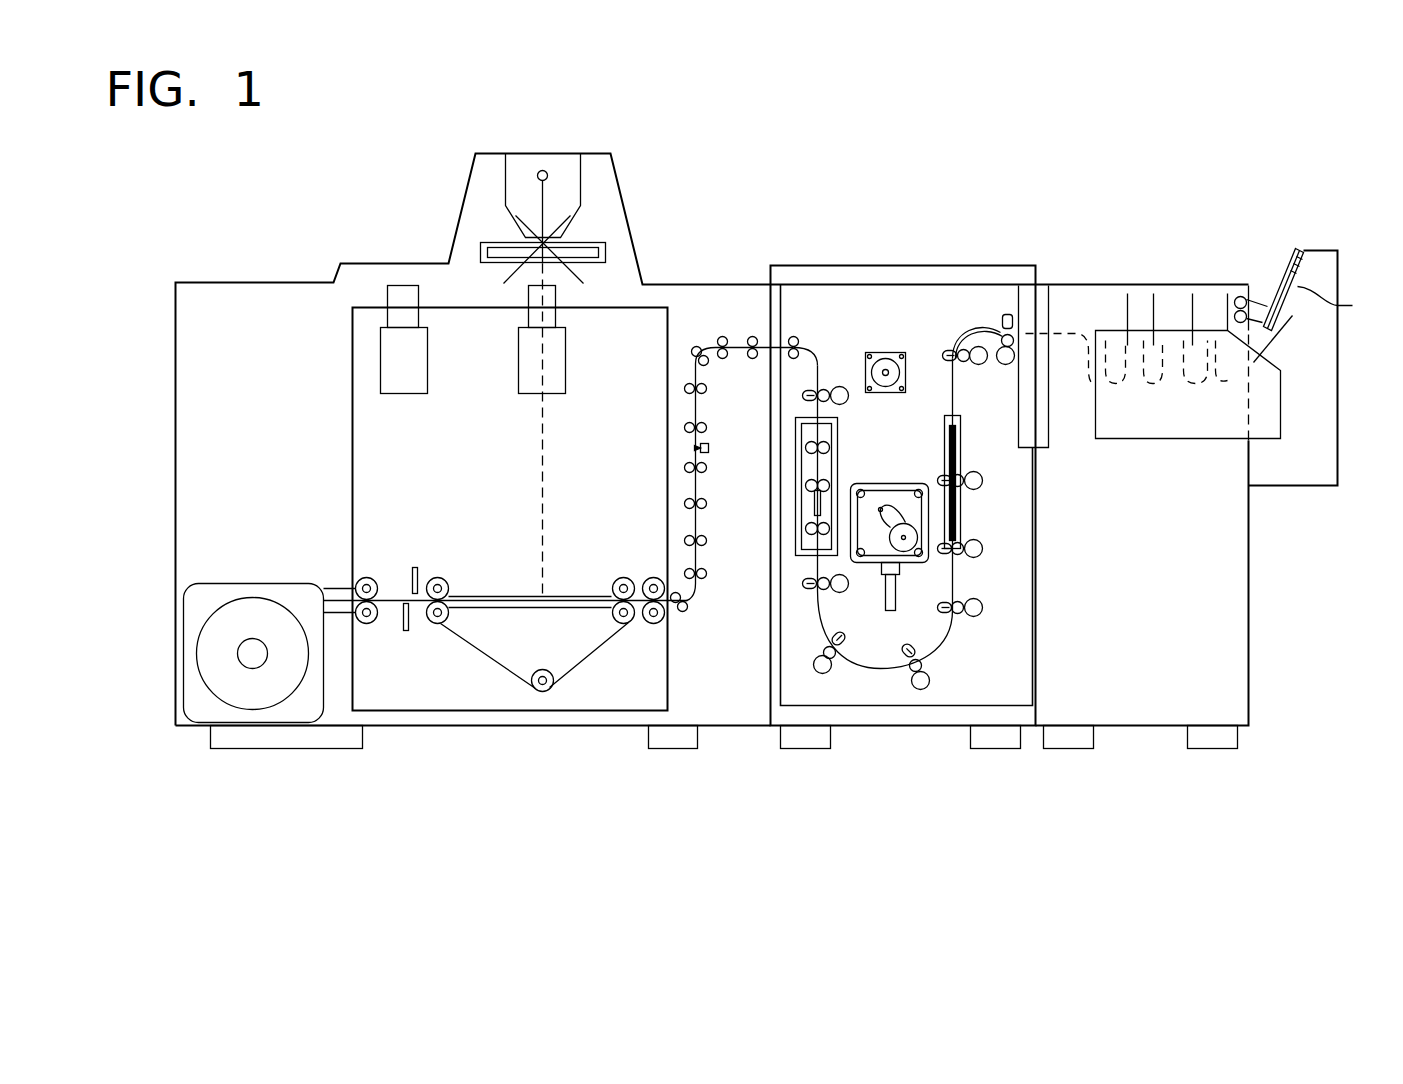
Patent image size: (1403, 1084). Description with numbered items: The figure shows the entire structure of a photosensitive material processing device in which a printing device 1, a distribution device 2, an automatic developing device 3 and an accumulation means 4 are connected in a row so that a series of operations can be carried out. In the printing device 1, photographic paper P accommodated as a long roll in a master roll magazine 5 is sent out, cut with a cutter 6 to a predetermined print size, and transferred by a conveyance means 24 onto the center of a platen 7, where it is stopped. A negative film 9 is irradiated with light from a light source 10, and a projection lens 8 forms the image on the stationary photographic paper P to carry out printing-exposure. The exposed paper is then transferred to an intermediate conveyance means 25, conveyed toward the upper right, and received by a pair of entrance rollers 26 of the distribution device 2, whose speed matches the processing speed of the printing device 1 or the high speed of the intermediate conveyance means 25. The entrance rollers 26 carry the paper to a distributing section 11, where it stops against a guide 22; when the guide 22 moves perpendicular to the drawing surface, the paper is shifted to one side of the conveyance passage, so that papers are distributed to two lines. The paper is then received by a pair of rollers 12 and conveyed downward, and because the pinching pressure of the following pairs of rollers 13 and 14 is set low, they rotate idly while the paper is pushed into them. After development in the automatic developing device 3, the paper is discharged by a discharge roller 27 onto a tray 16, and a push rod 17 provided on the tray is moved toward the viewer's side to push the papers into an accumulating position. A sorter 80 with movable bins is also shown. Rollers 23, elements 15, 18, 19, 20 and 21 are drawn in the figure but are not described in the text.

The printing device 1 is at (636, 222).
The distribution device 2 is at (920, 267).
The automatic developing device 3 is at (1079, 285).
The accumulation means 4 is at (1305, 250).
The master roll magazine 5 is at (220, 683).
The cutter 6 is at (405, 632).
The platen 7 is at (498, 608).
The projection lens 8 is at (553, 388).
The negative film 9 is at (540, 240).
The light source 10 is at (545, 170).
The distributing section 11 is at (840, 448).
The pair of rollers 12 is at (808, 590).
The pair of rollers 13 is at (835, 633).
The pair of rollers 14 is at (905, 648).
The valve 15 is at (940, 607).
The tray 16 is at (1342, 302).
The push rod 17 is at (1258, 297).
The guide plate 18 is at (1263, 347).
The processing roller pair 19 is at (809, 446).
The processing roller pair 20 is at (809, 484).
The processing roller pair 21 is at (809, 527).
The guide 22 is at (830, 497).
The feed rollers 23 is at (366, 625).
The conveyance means 24 is at (465, 642).
The intermediate conveyance means 25 is at (663, 614).
The entrance rollers 26 is at (793, 335).
The discharge roller 27 is at (1238, 295).
The sorter 80 is at (1195, 430).
The photographic paper P is at (542, 596).